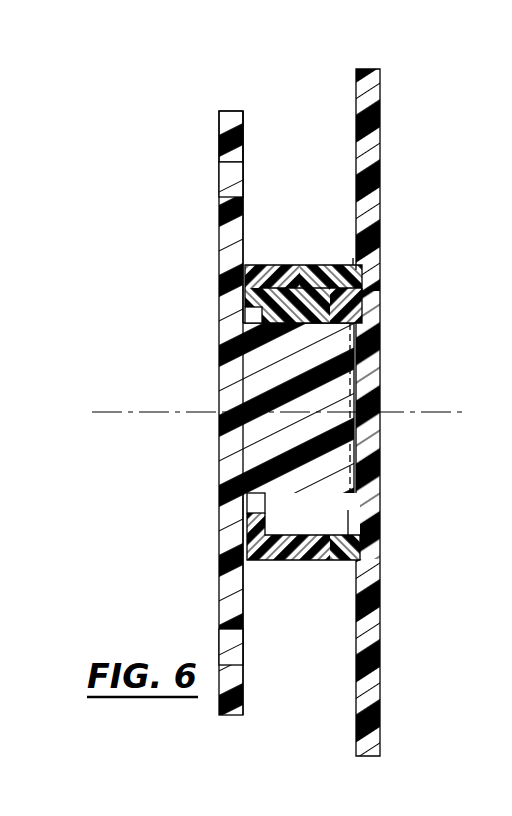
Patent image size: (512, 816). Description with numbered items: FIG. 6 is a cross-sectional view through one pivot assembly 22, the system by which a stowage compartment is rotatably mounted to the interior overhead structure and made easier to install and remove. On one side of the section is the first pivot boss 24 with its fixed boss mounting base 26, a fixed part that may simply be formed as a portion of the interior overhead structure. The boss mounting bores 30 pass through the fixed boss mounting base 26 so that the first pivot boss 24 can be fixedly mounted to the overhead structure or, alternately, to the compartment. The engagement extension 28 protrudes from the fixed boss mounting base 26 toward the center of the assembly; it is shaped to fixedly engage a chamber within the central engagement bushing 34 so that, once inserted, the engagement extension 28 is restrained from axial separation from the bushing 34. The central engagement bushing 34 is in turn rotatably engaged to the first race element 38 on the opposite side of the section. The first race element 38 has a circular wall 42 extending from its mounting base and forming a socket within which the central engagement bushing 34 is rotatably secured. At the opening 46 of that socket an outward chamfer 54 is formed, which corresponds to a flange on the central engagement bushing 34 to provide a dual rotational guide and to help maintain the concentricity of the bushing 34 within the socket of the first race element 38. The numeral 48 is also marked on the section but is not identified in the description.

The pivot assembly 22 is at (300, 96).
The first pivot boss 24 is at (226, 724).
The fixed boss mounting base 26 is at (228, 116).
The engagement extension 28 is at (323, 425).
The boss mounting bores 30 is at (226, 162).
The central engagement bushing 34 is at (378, 362).
The first race element 38 is at (370, 762).
The circular wall 42 is at (298, 268).
The opening 46 is at (363, 270).
The side flange 48 is at (380, 183).
The outward chamfer 54 is at (359, 266).